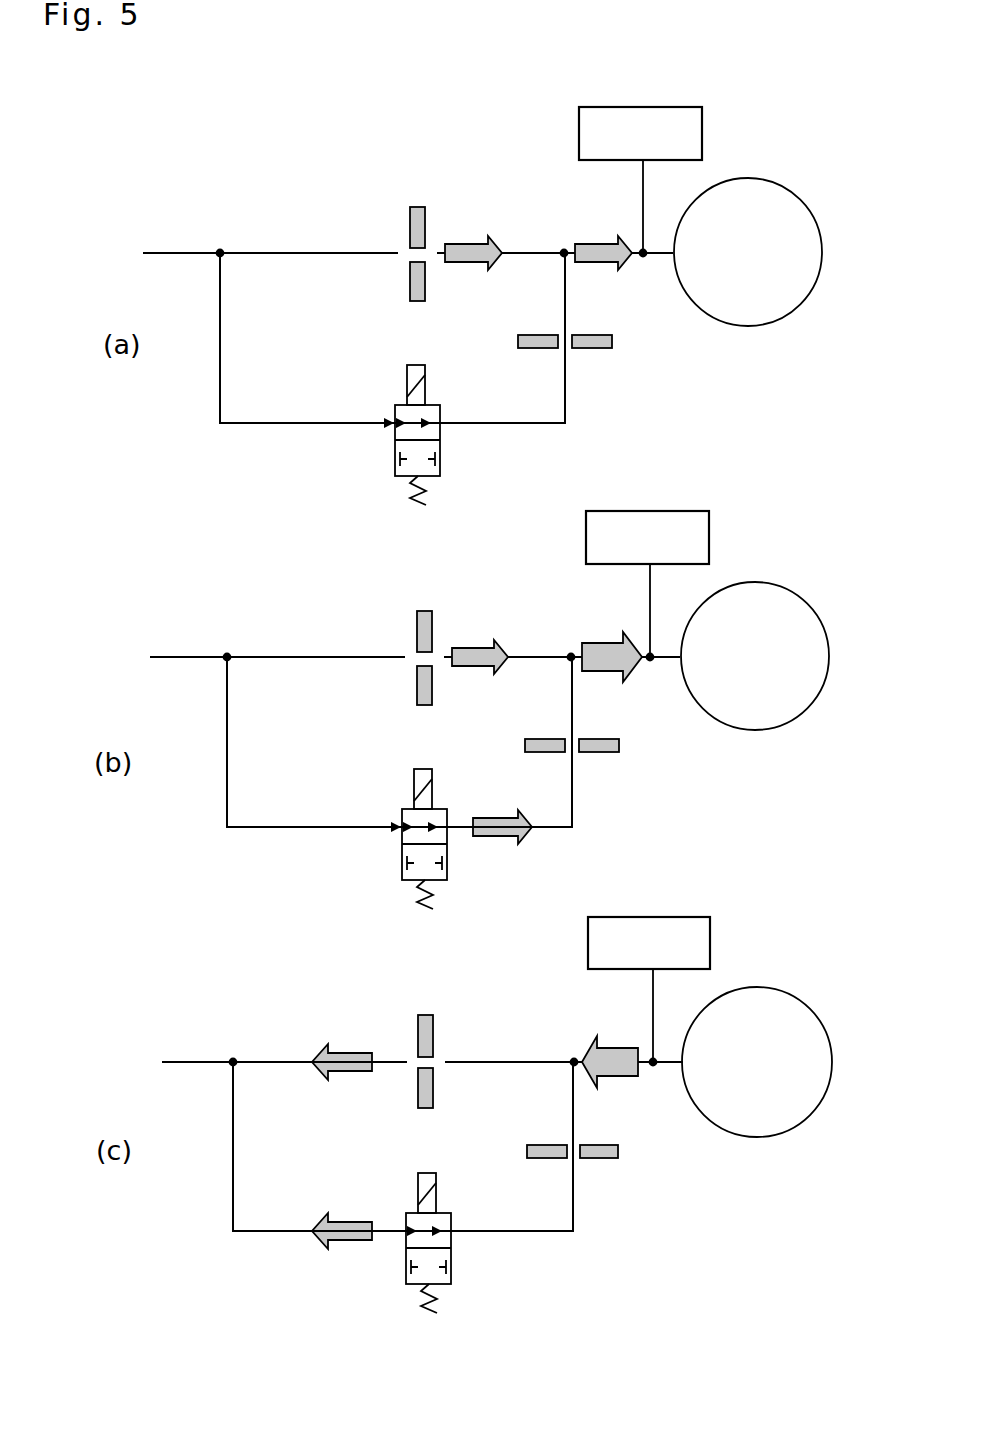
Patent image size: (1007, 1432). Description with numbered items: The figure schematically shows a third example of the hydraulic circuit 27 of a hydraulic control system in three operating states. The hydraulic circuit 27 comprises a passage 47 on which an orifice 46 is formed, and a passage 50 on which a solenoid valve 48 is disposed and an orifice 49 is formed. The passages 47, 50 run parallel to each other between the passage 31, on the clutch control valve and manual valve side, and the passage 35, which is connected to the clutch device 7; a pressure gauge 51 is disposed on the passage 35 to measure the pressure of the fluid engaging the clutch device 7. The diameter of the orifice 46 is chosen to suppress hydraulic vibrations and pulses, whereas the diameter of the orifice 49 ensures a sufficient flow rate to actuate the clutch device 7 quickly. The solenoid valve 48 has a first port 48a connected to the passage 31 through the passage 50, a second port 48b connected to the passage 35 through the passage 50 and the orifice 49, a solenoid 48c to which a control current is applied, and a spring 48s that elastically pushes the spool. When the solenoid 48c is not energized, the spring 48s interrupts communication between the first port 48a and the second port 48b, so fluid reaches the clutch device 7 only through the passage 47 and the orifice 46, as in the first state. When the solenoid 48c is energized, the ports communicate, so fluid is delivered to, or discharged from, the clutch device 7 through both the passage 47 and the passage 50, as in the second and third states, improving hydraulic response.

The hydraulic circuit 27 is at (265, 200).
The passage 31 is at (180, 258).
The passage 47 is at (300, 248).
The orifice 46 is at (425, 228).
The passage 35 is at (668, 258).
The pressure gauge 51 is at (700, 130).
The clutch device 7 is at (773, 326).
The orifice 49 is at (595, 348).
The passage 50 is at (560, 445).
The solenoid valve 48 is at (395, 440).
The first port 48a is at (393, 420).
The second port 48b is at (440, 423).
The solenoid 48c is at (425, 383).
The spring 48s is at (426, 498).